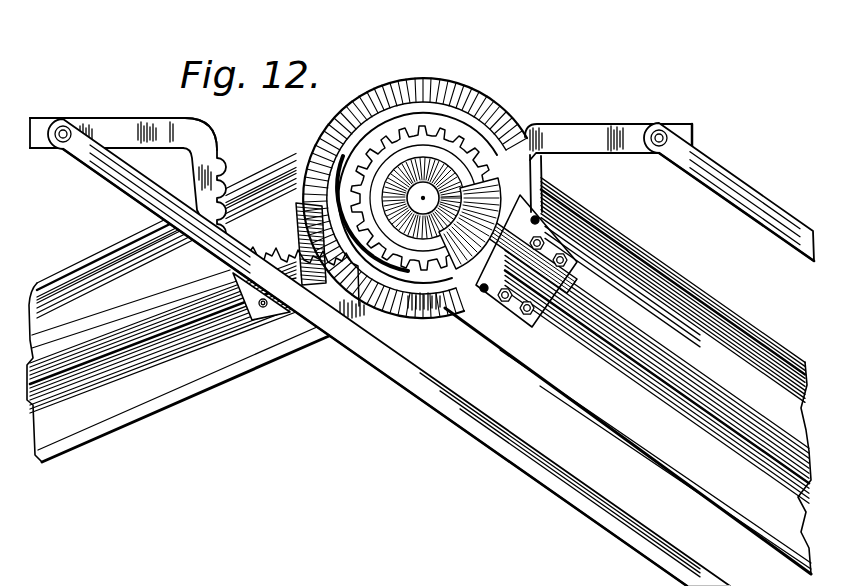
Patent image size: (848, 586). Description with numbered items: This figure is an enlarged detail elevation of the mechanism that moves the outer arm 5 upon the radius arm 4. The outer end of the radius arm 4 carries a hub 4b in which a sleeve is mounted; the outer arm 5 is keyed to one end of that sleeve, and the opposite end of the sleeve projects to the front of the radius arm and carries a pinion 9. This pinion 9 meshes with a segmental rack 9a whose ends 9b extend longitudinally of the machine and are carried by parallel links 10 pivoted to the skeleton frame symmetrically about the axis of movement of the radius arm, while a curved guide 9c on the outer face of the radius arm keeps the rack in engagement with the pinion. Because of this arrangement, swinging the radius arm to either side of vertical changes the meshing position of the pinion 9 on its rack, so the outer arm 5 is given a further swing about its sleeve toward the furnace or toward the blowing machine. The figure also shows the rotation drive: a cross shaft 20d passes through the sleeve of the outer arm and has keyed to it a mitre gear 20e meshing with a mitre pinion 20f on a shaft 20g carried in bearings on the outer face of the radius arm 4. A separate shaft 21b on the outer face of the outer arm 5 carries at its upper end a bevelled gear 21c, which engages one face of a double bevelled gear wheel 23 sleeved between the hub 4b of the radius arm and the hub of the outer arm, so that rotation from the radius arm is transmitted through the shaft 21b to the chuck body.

The radius arm 4 is at (603, 400).
The hub of the radius arm 4b is at (471, 153).
The outer arm 5 is at (182, 373).
The pinion 9 is at (358, 157).
The segmental rack 9a is at (380, 313).
The ends of the segmental rack 9b is at (599, 105).
The curved guide 9c is at (480, 297).
The parallel links 10 is at (463, 413).
The cross shaft 20d is at (515, 192).
The mitre gear 20e is at (416, 168).
The mitre pinion 20f is at (447, 306).
The shaft 20g is at (710, 395).
The shaft 21b is at (193, 307).
The bevelled gear 21c is at (293, 208).
The double bevelled gear wheel 23 is at (443, 78).